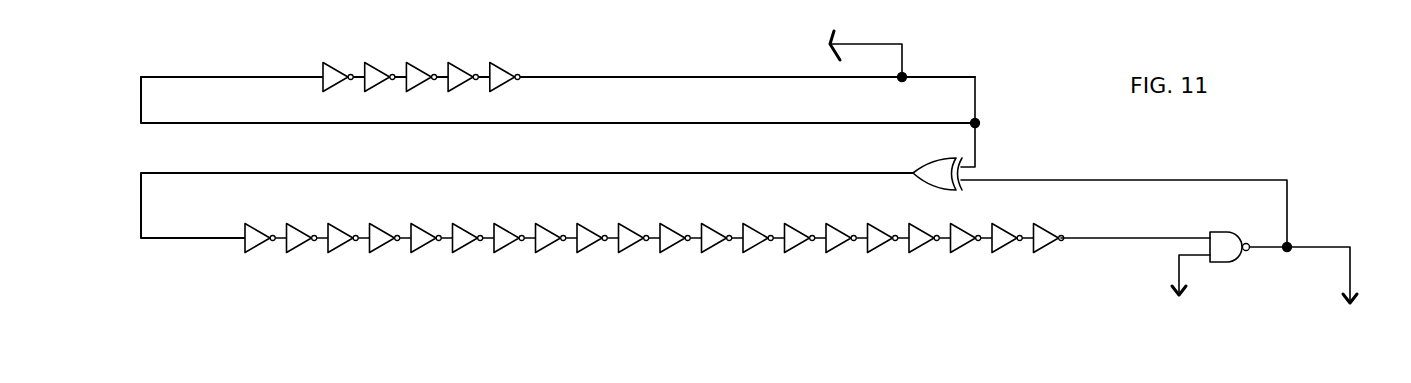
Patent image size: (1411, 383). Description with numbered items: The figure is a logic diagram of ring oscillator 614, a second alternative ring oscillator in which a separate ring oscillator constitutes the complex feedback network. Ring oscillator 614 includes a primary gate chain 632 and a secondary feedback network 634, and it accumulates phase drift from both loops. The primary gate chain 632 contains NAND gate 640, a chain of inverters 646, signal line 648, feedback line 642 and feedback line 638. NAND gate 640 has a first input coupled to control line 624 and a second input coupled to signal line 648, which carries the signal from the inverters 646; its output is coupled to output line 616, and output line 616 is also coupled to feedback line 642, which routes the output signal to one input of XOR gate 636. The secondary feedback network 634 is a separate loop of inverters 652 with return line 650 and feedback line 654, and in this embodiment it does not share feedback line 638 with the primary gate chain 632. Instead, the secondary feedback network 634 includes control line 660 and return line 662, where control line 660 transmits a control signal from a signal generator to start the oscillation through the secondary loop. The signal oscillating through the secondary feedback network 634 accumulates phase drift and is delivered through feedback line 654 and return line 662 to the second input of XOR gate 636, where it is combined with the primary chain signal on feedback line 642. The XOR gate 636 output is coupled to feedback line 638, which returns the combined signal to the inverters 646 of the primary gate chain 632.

The ring oscillator 614 is at (262, 297).
The output line 616 is at (1320, 247).
The control line 624 is at (1178, 273).
The primary gate chain 632 is at (128, 150).
The secondary feedback network 634 is at (128, 50).
The XOR gate 636 is at (922, 162).
The feedback line 638 is at (475, 173).
The NAND gate 640 is at (1218, 262).
The feedback line 642 is at (1127, 179).
The inverters 646 is at (1068, 255).
The signal line 648 is at (1105, 238).
The return line 650 is at (201, 123).
The inverters 652 is at (522, 62).
The feedback line 654 is at (665, 77).
The control line 660 is at (890, 44).
The return line 662 is at (977, 87).